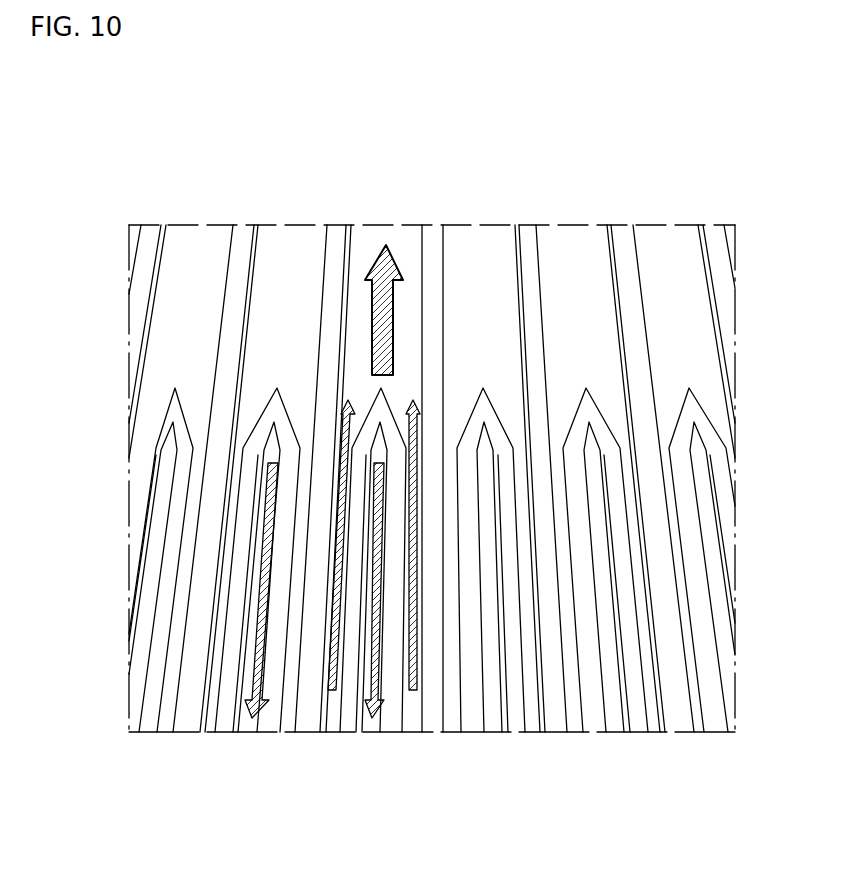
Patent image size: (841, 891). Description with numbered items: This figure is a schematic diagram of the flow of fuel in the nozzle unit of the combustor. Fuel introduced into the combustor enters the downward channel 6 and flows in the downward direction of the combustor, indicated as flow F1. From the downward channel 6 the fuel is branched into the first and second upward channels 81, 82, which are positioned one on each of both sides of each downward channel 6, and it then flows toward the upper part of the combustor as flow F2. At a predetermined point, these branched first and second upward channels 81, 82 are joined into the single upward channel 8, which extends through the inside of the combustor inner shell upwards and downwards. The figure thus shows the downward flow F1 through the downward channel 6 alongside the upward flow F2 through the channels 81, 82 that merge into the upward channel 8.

The upward channel 8 is at (403, 243).
The first upward channel 81 is at (330, 735).
The second upward channel 82 is at (418, 735).
The downward channel 6 is at (272, 452).
The downward flow of fuel F1 is at (250, 722).
The upward flow of fuel F2 is at (345, 398).